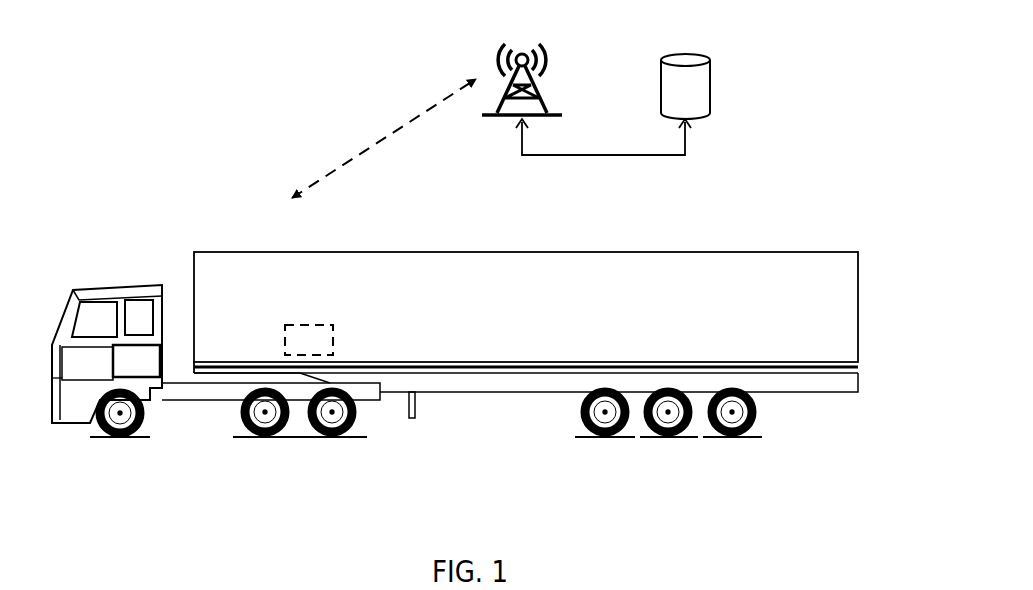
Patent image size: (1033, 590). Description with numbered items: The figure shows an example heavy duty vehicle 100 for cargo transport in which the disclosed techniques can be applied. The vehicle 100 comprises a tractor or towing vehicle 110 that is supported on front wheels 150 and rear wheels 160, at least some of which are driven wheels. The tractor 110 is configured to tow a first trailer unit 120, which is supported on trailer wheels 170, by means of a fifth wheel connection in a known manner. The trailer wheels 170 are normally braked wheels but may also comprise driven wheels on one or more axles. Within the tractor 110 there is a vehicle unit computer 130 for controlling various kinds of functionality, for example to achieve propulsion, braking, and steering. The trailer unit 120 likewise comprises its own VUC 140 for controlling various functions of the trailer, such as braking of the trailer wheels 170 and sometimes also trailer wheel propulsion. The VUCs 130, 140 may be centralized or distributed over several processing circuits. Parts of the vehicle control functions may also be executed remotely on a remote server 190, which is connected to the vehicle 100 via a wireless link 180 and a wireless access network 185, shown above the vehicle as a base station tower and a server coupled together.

The vehicle 100 is at (110, 204).
The tractor 110 is at (95, 283).
The first trailer unit 120 is at (372, 252).
The vehicle unit computer 130 is at (136, 361).
The VUC 140 is at (309, 340).
The front wheels 150 is at (92, 455).
The rear wheels 160 is at (264, 455).
The trailer wheels 170 is at (731, 464).
The wireless link 180 is at (384, 138).
The wireless access network 185 is at (558, 110).
The remote server 190 is at (718, 94).